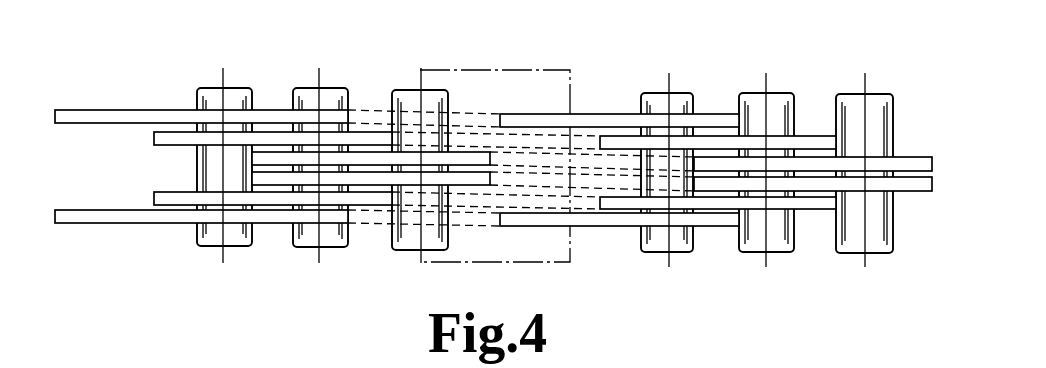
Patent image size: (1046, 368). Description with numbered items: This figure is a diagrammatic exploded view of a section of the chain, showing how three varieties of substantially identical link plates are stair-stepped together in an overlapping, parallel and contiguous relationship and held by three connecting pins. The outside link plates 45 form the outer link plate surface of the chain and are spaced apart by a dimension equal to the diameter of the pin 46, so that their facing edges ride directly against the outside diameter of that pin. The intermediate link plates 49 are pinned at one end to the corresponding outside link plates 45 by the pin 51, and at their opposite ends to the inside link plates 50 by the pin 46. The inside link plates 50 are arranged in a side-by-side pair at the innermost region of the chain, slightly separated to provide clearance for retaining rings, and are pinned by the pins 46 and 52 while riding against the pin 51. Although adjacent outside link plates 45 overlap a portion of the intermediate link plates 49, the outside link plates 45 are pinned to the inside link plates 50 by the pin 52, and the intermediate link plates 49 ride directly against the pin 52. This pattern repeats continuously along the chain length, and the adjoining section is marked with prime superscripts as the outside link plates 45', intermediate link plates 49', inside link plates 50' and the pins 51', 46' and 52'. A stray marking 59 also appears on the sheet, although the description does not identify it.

The outside link plate 45 is at (277, 168).
The intermediate link plate 49 is at (342, 170).
The inside link plate 50 is at (473, 162).
The pin 51 is at (225, 197).
The pin 46 is at (322, 197).
The pin 52 is at (420, 198).
The outside link plate 45' is at (620, 179).
The intermediate link plate 49' is at (721, 180).
The inside link plate 50' is at (816, 179).
The pin 51' is at (674, 206).
The pin 46' is at (774, 202).
The pin 52' is at (870, 203).
The stray reference numeral 59 is at (195, 367).